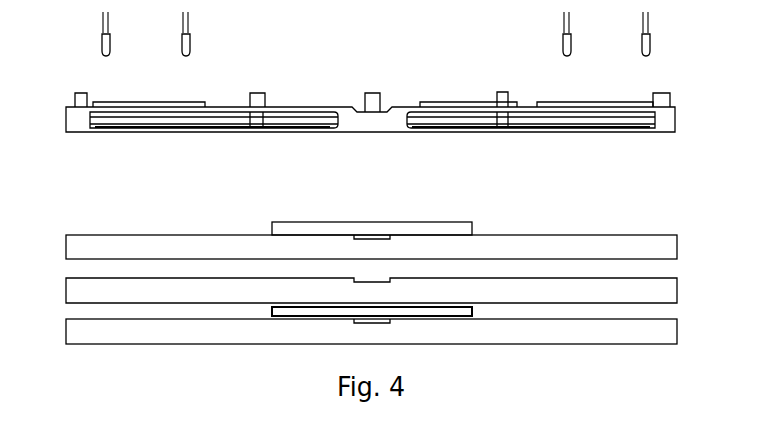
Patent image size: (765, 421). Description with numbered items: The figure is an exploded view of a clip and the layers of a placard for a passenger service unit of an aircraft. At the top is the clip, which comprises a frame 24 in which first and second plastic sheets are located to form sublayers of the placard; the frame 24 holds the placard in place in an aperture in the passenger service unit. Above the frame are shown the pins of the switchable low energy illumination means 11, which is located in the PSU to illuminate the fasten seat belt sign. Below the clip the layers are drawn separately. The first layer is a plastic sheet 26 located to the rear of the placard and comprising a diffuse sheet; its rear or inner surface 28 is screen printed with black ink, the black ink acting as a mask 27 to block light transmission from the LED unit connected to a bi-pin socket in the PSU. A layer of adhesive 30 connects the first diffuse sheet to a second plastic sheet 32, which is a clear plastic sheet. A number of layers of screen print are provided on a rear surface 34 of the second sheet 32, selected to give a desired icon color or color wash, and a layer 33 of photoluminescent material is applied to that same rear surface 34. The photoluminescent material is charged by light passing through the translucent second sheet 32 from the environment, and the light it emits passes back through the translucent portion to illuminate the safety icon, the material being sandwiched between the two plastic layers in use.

The switchable low energy illumination means 11 is at (572, 53).
The frame 24 is at (665, 117).
The plastic sheet 26 is at (188, 248).
The mask 27 is at (412, 232).
The rear or inner surface 28 is at (375, 221).
The layer of adhesive 30 is at (657, 290).
The second plastic sheet 32 is at (657, 331).
The layer of photoluminescent material 33 is at (450, 310).
The rear surface 34 is at (375, 301).